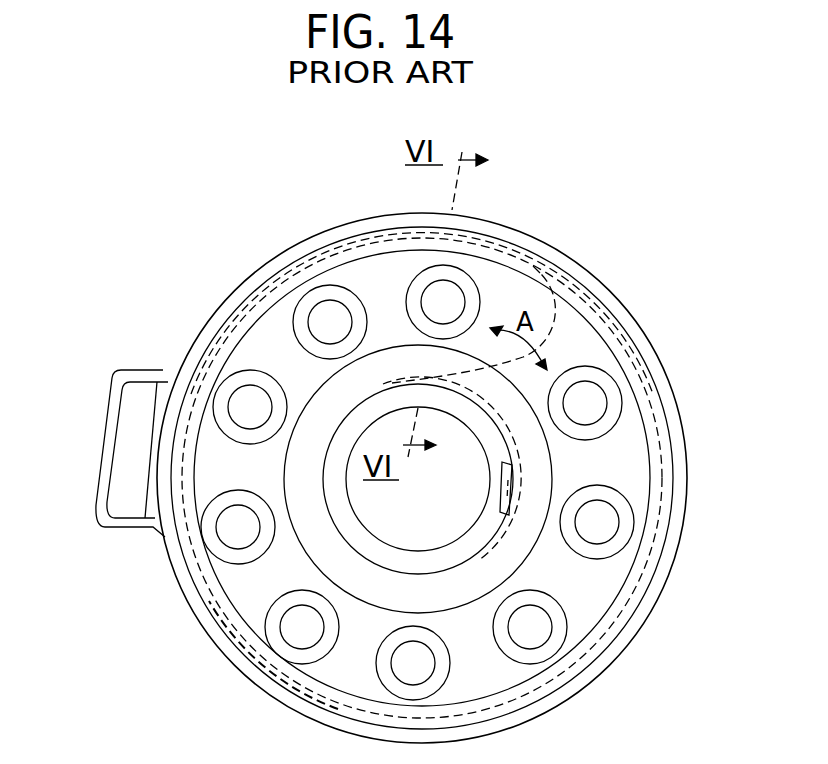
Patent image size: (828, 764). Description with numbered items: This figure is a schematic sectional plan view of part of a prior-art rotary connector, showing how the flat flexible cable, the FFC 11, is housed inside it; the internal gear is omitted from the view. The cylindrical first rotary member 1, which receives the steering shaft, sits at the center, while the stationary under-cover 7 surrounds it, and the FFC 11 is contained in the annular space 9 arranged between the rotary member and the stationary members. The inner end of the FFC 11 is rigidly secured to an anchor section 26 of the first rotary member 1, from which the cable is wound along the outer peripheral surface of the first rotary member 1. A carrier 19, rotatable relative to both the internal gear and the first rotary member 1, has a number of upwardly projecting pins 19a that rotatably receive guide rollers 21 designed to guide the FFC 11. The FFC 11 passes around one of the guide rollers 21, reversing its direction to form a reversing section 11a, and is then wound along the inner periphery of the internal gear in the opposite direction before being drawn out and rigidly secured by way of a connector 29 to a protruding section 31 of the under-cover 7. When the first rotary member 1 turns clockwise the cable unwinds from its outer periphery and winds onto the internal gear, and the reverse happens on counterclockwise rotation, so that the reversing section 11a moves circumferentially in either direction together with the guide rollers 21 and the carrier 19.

The first rotary member 1 is at (384, 396).
The under-cover 7 is at (593, 672).
The annular space 9 is at (359, 676).
The FFC 11 is at (479, 714).
The reversing section 11a is at (588, 268).
The carrier 19 is at (585, 603).
The upwardly projecting pins 19a is at (594, 393).
The guide rollers 21 is at (622, 422).
The anchor section 26 is at (503, 484).
The connector 29 is at (105, 468).
The protruding section 31 is at (137, 368).